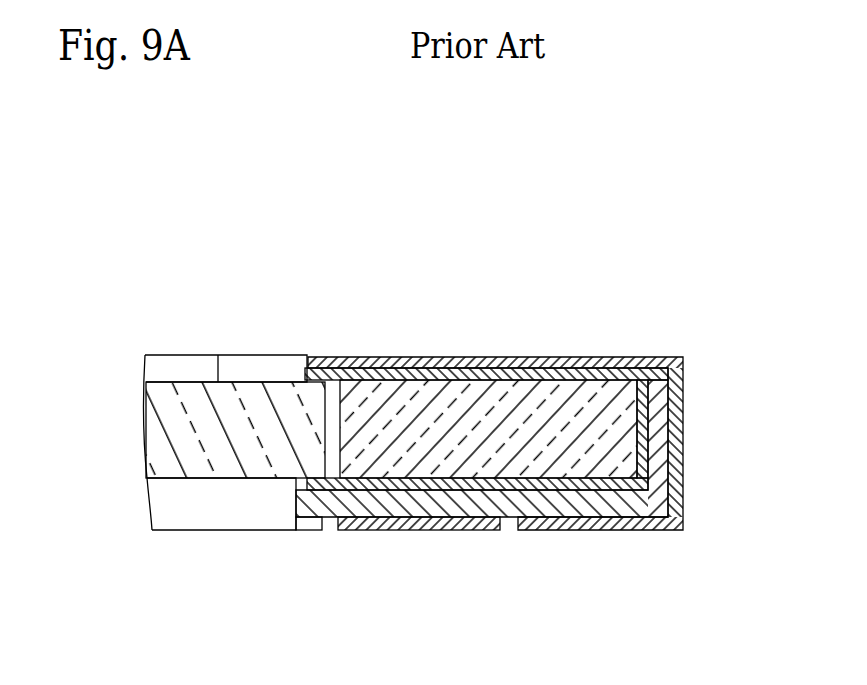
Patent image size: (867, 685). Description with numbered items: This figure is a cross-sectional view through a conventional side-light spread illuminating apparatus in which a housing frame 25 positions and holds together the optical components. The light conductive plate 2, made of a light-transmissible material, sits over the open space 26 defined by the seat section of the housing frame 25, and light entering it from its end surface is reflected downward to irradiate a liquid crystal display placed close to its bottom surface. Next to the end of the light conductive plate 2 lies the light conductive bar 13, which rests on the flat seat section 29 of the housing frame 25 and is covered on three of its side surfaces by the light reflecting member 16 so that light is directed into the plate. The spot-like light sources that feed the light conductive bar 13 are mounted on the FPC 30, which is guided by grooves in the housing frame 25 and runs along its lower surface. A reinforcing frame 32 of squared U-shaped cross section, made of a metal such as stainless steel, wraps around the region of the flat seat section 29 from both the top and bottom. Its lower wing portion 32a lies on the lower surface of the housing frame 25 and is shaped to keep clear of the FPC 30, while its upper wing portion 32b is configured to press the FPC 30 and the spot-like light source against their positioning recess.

The light conductive plate 2 is at (245, 412).
The light conductive bar 13 is at (497, 420).
The light reflecting member 16 is at (424, 366).
The housing frame 25 is at (305, 531).
The open space 26 is at (200, 532).
The flat seat section 29 is at (547, 490).
The FPC 30 is at (392, 532).
The reinforcing frame 32 is at (686, 404).
The wing portion 32a is at (615, 530).
The wing portion 32b is at (635, 359).